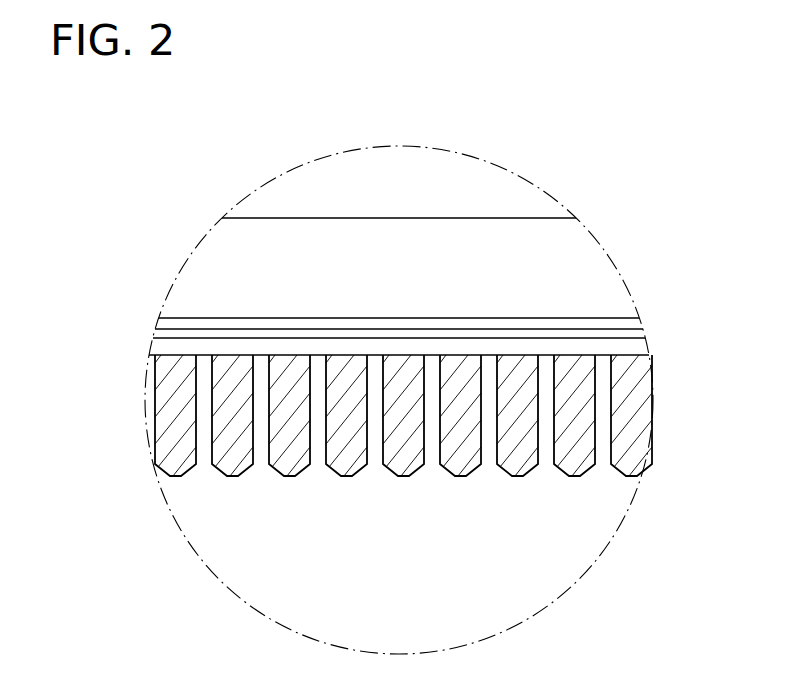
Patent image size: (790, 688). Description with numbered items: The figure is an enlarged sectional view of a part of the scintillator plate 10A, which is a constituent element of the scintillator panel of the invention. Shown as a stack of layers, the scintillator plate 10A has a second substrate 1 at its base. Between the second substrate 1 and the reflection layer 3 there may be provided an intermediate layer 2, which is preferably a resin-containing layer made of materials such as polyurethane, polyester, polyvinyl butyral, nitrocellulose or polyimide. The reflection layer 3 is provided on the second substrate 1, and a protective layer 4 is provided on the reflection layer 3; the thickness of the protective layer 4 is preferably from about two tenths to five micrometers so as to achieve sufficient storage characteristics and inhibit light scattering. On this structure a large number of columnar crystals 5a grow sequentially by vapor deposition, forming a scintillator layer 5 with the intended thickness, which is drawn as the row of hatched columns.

The scintillator plate 10A is at (670, 137).
The second substrate 1 is at (623, 290).
The intermediate layer 2 is at (643, 323).
The reflection layer 3 is at (643, 334).
The protective layer 4 is at (645, 348).
The scintillator layer 5 is at (389, 415).
The columnar crystals 5a is at (157, 462).